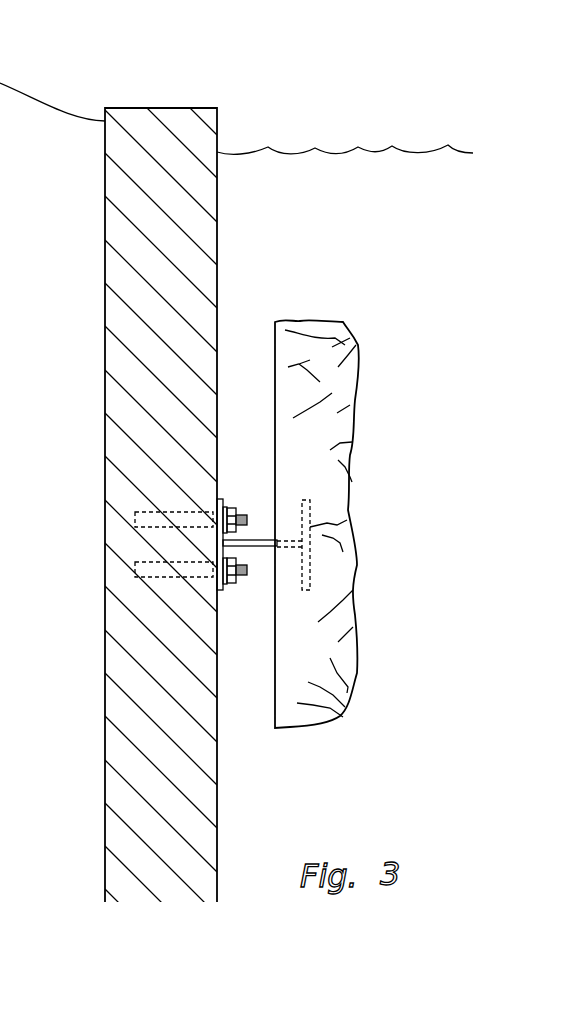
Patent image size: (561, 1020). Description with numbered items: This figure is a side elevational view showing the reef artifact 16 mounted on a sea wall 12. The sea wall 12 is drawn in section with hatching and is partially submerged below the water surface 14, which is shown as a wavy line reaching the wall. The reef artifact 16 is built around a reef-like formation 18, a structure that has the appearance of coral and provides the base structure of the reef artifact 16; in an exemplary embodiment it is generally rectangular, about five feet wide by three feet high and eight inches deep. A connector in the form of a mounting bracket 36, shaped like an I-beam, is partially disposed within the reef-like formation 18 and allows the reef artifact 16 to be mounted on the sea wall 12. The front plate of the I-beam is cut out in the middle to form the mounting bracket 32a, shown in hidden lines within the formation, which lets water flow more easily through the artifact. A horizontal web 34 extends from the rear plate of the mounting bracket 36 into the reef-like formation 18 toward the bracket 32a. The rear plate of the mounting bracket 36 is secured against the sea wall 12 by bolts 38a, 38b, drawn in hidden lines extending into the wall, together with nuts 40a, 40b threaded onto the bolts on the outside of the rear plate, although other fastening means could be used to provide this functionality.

The sea wall 12 is at (145, 122).
The water surface 14 is at (335, 153).
The reef artifact 16 is at (359, 478).
The reef-like formation 18 is at (338, 310).
The mounting bracket 32a is at (308, 517).
The horizontal mounting plate 34 is at (263, 541).
The mounting bracket 36 is at (226, 501).
The bolt 38a is at (167, 573).
The bolt 38b is at (180, 523).
The nut 40a is at (231, 585).
The nut 40b is at (232, 505).